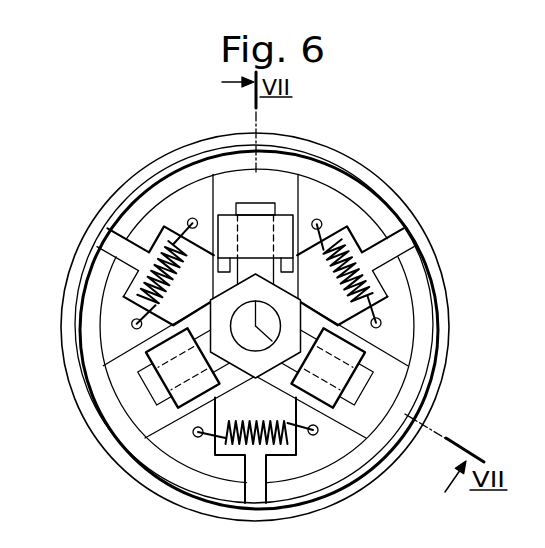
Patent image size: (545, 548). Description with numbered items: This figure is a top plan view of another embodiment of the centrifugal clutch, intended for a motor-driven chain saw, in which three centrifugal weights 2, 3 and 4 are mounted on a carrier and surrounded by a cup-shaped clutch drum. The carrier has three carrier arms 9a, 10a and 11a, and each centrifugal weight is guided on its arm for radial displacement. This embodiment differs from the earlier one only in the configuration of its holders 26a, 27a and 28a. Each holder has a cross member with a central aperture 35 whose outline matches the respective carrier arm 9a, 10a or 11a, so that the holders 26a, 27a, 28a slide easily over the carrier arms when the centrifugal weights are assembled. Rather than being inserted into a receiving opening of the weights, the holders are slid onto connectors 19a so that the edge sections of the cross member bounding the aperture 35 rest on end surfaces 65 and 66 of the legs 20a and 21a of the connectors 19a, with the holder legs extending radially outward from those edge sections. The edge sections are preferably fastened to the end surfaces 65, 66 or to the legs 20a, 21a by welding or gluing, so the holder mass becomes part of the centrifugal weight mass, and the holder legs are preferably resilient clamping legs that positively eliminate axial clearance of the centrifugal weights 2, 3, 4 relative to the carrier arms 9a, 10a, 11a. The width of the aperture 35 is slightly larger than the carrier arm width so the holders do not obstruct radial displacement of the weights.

The centrifugal weight 2 is at (195, 188).
The centrifugal weight 3 is at (407, 313).
The centrifugal weight 4 is at (177, 447).
The carrier arm 9a is at (263, 268).
The carrier arm 10a is at (360, 388).
The carrier arm 11a is at (160, 392).
The connector 19a is at (259, 183).
The leg of connector 20a is at (186, 222).
The leg of connector 21a is at (323, 226).
The holder 26a is at (259, 228).
The holder 27a is at (362, 352).
The holder 28a is at (138, 366).
The central aperture 35 is at (248, 270).
The end surface 65 is at (128, 291).
The end surface 66 is at (349, 260).